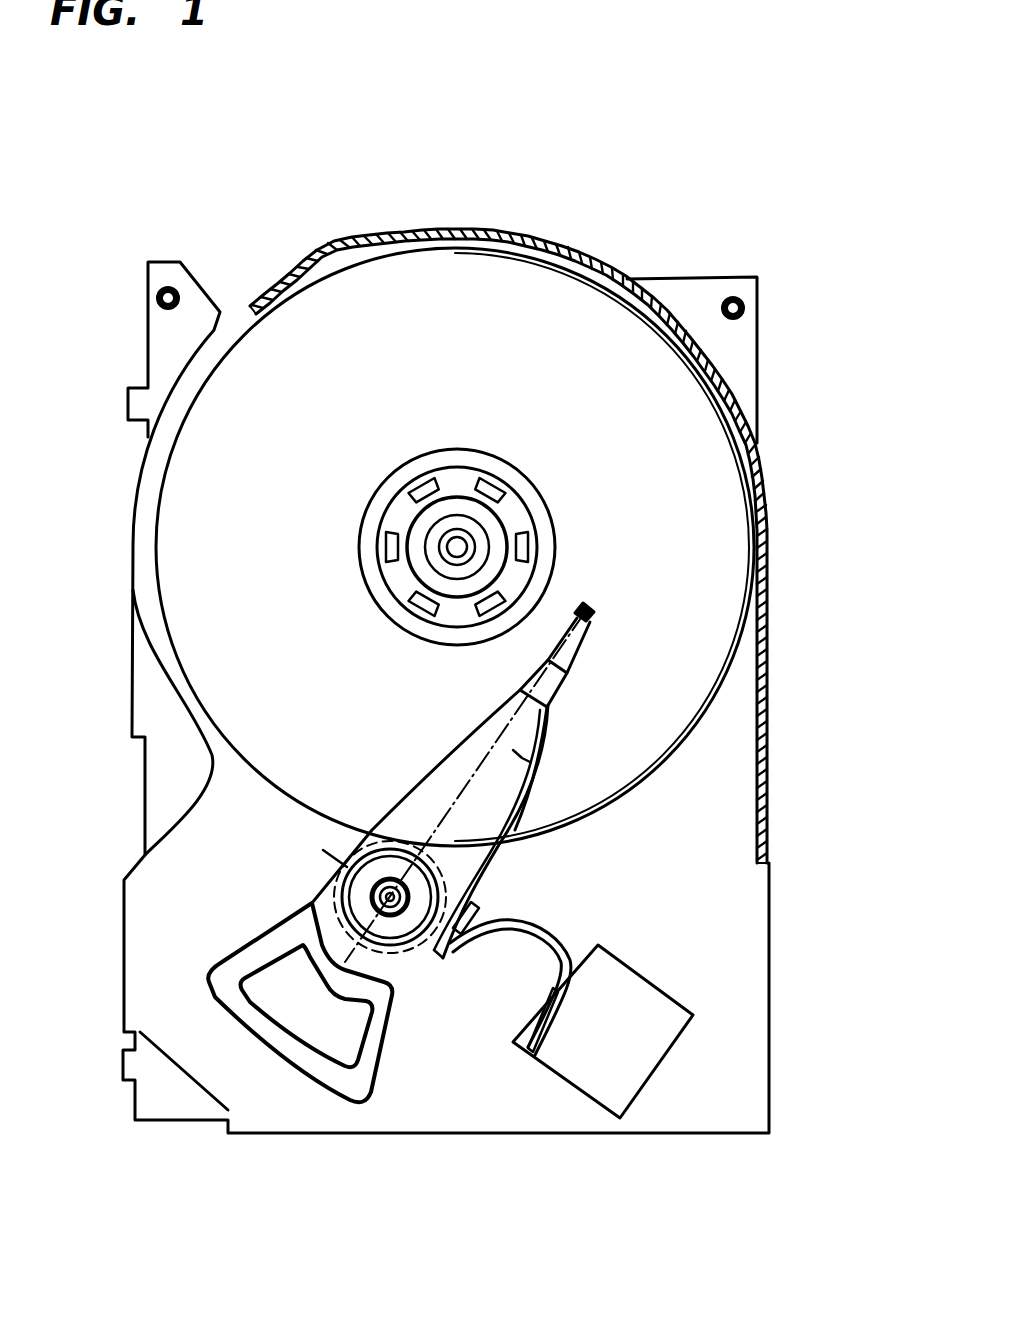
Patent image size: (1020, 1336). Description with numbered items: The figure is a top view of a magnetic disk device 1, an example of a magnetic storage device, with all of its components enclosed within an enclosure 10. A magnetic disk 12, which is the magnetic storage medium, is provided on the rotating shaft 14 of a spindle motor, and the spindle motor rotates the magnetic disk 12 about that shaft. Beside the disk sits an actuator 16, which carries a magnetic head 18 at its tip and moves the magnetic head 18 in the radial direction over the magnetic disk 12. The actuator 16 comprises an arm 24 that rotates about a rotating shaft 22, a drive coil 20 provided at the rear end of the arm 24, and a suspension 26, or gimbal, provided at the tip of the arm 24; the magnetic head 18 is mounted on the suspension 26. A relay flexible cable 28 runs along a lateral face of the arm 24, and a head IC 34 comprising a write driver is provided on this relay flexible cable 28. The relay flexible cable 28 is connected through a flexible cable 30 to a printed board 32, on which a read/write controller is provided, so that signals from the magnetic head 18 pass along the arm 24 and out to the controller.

The disk drive 1 is at (725, 237).
The enclosure 10 is at (750, 367).
The magnetic disk 12 is at (715, 497).
The rotating shaft 14 is at (447, 540).
The actuator 16 is at (410, 783).
The magnetic head 18 is at (595, 612).
The drive coil 20 is at (227, 958).
The rotating shaft 22 is at (390, 915).
The arm 24 is at (507, 787).
The suspension 26 is at (548, 680).
The relay flexible cable 28 is at (500, 848).
The flexible cable 30 is at (577, 936).
The printed board 32 is at (603, 1090).
The head IC 34 is at (478, 900).